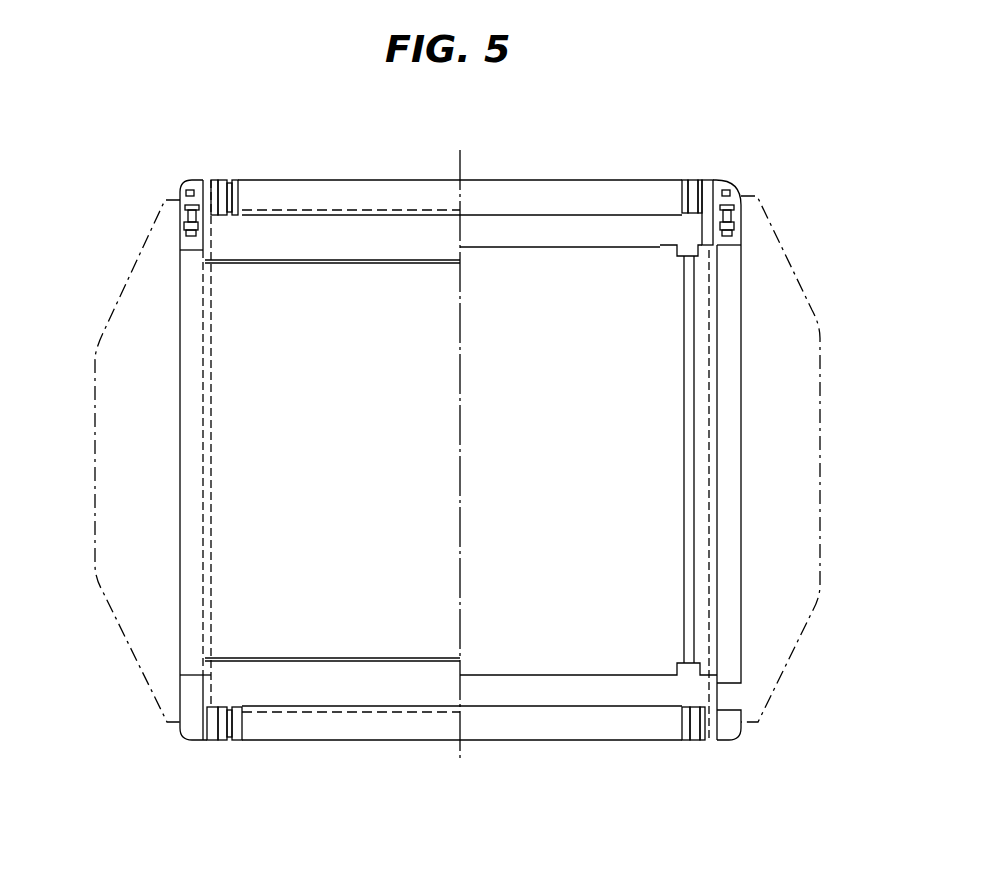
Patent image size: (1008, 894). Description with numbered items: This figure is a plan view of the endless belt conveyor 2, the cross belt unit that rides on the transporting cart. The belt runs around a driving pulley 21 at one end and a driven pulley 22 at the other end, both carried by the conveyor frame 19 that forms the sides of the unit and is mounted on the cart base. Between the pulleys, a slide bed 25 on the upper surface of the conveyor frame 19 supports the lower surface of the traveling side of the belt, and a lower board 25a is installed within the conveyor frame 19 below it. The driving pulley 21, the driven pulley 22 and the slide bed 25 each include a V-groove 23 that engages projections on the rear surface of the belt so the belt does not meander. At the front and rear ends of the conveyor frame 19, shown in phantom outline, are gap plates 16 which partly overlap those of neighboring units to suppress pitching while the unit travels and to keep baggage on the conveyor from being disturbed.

The endless belt conveyor 2 is at (452, 452).
The gap plates 16 is at (112, 412).
The conveyor frame 19 is at (730, 200).
The driving pulley 21 is at (380, 740).
The driven pulley 22 is at (358, 180).
The V-groove 23 is at (685, 598).
The slide bed 25 is at (548, 262).
The lower board 25a is at (345, 359).